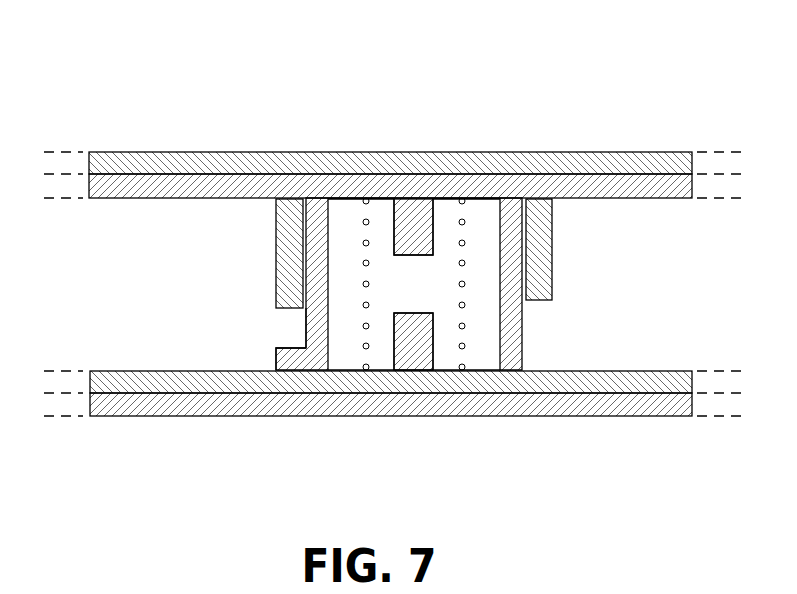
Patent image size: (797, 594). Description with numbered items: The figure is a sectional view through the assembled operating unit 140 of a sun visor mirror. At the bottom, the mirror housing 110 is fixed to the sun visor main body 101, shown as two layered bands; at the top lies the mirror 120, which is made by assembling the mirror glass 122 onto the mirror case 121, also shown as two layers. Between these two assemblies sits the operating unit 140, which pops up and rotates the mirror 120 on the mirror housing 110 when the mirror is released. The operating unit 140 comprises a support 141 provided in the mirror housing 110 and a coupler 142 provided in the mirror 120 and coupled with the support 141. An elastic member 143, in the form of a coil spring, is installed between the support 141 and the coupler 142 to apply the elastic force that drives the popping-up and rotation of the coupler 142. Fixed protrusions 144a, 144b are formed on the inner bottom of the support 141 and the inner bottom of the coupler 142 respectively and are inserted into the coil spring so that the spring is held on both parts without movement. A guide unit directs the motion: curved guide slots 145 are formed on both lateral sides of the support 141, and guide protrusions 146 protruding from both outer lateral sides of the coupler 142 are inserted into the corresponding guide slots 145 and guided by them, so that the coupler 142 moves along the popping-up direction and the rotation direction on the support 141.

The sun visor main body 101 is at (320, 403).
The mirror housing 110 is at (170, 380).
The mirror 120 is at (390, 115).
The mirror case 121 is at (250, 186).
The mirror glass 122 is at (193, 166).
The operating unit 140 is at (433, 265).
The support 141 is at (276, 245).
The coupler 142 is at (329, 221).
The elastic member 143 is at (464, 241).
The fixed protrusion 144a is at (424, 341).
The fixed protrusion 144b is at (425, 228).
The guide slot 145 is at (277, 319).
The guide protrusion 146 is at (277, 360).